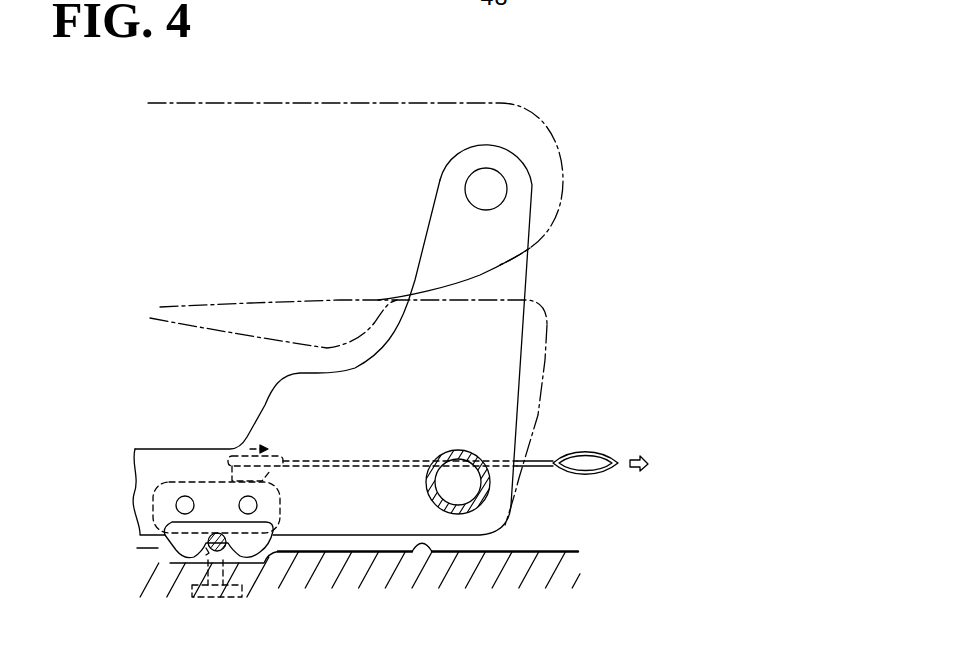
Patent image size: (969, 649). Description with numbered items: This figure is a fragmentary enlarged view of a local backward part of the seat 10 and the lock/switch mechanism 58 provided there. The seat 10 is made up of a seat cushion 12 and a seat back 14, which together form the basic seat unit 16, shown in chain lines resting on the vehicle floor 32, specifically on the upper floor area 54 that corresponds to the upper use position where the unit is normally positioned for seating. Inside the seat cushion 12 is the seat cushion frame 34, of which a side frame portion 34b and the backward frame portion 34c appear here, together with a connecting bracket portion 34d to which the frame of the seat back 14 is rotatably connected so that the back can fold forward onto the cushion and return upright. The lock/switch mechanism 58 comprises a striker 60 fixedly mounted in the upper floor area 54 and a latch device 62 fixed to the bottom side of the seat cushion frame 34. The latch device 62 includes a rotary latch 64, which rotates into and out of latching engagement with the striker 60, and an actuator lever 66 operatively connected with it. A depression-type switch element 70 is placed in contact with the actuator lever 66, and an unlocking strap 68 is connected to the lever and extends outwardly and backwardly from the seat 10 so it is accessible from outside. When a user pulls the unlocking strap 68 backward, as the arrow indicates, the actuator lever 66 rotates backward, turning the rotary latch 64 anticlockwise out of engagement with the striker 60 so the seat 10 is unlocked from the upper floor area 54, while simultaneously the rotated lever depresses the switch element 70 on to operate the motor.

The seat 10 is at (613, 102).
The seat cushion 12 is at (565, 369).
The seat back 14 is at (398, 102).
The basic seat unit 16 is at (582, 303).
The vehicle floor 32 is at (542, 551).
The seat cushion frame 34 is at (273, 389).
The side frame portion 34b is at (148, 449).
The backward frame portion 34c is at (458, 450).
The connecting bracket portion 34d is at (532, 277).
The upper floor area 54 is at (432, 553).
The lock/switch mechanism 58 is at (275, 598).
The striker 60 is at (207, 537).
The latch device 62 is at (276, 535).
The rotary latch 64 is at (203, 562).
The actuator lever 66 is at (230, 480).
The unlocking strap 68 is at (607, 453).
The switch element 70 is at (282, 483).